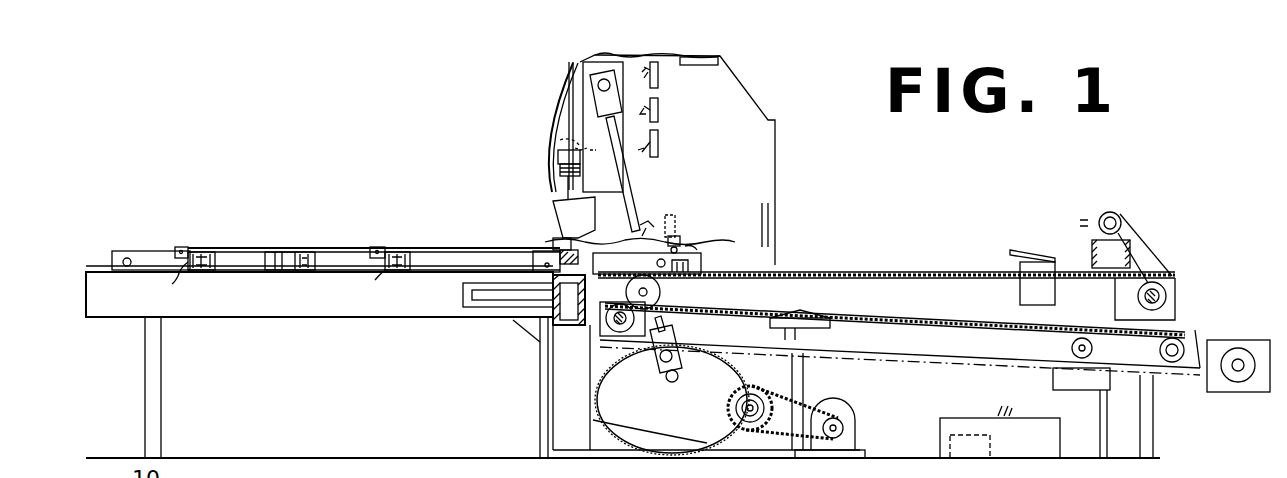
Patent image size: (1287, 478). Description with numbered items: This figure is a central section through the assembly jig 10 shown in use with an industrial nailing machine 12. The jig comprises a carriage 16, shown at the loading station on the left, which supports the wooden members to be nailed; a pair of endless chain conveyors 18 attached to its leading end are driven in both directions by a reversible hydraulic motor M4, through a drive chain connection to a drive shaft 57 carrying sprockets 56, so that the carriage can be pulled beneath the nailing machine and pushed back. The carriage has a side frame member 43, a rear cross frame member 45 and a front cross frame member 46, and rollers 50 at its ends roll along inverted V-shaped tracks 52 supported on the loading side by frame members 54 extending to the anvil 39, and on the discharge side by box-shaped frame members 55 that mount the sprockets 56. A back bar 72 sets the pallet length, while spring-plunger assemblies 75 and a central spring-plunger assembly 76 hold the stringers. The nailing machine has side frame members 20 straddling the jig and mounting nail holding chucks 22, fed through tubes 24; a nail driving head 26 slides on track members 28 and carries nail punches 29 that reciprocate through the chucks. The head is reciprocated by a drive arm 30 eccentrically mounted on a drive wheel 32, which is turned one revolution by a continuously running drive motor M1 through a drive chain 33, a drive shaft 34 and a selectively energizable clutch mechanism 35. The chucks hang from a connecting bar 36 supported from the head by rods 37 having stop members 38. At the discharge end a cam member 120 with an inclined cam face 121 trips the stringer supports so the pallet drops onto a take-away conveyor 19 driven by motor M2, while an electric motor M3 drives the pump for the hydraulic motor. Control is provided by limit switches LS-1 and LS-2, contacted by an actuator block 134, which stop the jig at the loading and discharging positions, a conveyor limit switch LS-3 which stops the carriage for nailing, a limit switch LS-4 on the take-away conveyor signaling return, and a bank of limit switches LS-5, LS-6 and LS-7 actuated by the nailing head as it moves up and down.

The assembly jig 10 is at (138, 210).
The nailing machine 12 is at (757, 96).
The carriage 16 is at (340, 246).
The endless chain conveyors 18 is at (820, 272).
The take-away conveyor 19 is at (880, 312).
The side frame members 20 is at (780, 250).
The nail holding chucks 22 is at (566, 236).
The tubes 24 is at (557, 82).
The nail driving head 26 is at (580, 108).
The track members 28 is at (606, 177).
The nail punches 29 is at (568, 190).
The drive arm 30 is at (640, 205).
The drive wheel 32 is at (652, 411).
The drive chain 33 is at (818, 410).
The drive shaft 34 is at (747, 408).
The clutch mechanism 35 is at (762, 386).
The connecting bar 36 is at (556, 215).
The rods 37 is at (608, 186).
The stop members 38 is at (565, 136).
The anvil 39 is at (621, 307).
The side frame member 43 is at (452, 270).
The rear cross frame member 45 is at (184, 283).
The front cross frame member 46 is at (531, 257).
The rollers 50 is at (112, 254).
The tracks 52 is at (88, 267).
The frame members 54 is at (90, 284).
The box-shaped frame members 55 is at (897, 275).
The sprockets 56 is at (662, 292).
The drive shaft 57 is at (1166, 297).
The back bar 72 is at (390, 272).
The spring-plunger assemblies 75 is at (207, 243).
The spring-plunger assembly 76 is at (300, 264).
The cam member 120 is at (1023, 258).
The inclined cam face 121 is at (1012, 262).
The actuator block 134 is at (690, 248).
The limit switch LS-1 is at (680, 238).
The limit switch LS-2 is at (676, 216).
The conveyor limit switch LS-3 is at (553, 243).
The limit switch LS-4 is at (810, 302).
The limit switch LS-5 is at (660, 80).
The limit switch LS-6 is at (660, 107).
The limit switch LS-7 is at (660, 136).
The drive motor M1 is at (858, 434).
The motor M2 is at (1050, 340).
The electric motor M3 is at (966, 433).
The hydraulic motor M4 is at (1110, 212).